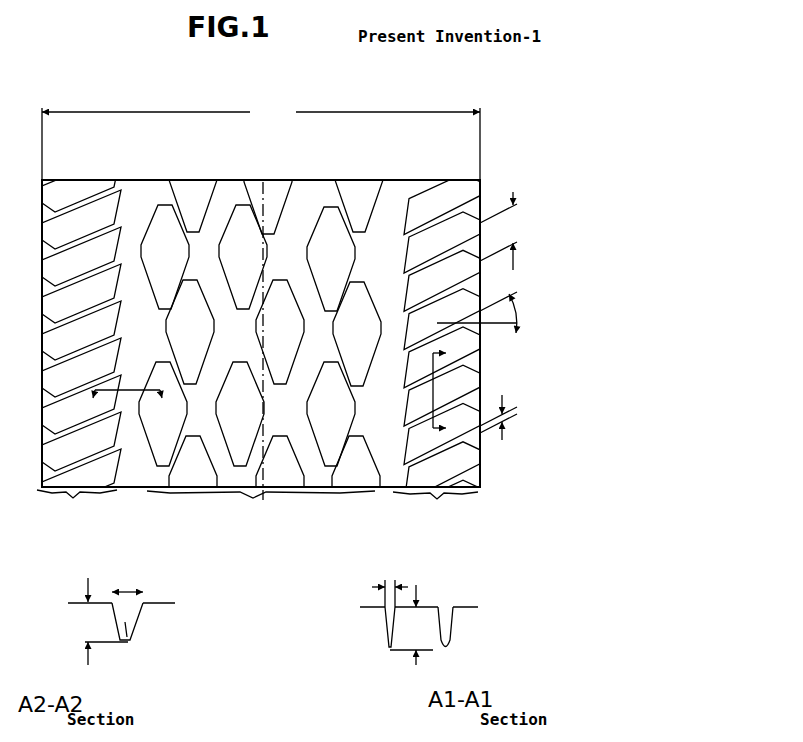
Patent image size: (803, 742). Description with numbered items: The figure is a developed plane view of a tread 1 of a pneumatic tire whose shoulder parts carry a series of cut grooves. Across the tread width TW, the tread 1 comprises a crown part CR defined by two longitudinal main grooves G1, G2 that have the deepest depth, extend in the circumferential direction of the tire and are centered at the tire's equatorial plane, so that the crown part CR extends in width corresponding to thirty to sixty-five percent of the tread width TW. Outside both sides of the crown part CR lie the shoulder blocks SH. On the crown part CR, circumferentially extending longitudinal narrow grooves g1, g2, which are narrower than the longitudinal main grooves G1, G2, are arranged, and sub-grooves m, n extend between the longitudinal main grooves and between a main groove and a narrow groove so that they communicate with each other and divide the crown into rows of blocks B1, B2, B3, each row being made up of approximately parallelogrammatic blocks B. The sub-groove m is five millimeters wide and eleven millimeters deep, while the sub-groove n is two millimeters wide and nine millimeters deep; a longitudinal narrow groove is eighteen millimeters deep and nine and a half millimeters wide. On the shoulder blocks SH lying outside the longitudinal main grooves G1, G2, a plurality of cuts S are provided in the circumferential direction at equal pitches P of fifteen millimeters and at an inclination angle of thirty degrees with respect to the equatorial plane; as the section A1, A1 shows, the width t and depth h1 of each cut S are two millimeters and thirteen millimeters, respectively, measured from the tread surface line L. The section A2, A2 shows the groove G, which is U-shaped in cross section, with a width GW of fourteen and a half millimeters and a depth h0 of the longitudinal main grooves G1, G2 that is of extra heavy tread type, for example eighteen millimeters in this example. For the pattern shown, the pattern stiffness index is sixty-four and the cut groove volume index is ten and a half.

The tread 1 is at (497, 197).
The tread width TW is at (261, 140).
The crown part CR is at (262, 352).
The shoulder blocks SH is at (258, 347).
The block B is at (163, 261).
The row of blocks B1 is at (302, 176).
The row of blocks B2 is at (215, 176).
The row of blocks B3 is at (392, 176).
The longitudinal main groove G1 is at (404, 196).
The longitudinal main groove G2 is at (137, 197).
The longitudinal narrow groove g1 is at (222, 195).
The longitudinal narrow groove g2 is at (313, 192).
The pitch P is at (500, 231).
The cut S is at (470, 355).
The section A1- A1 is at (446, 395).
The width of the cut t is at (445, 500).
The section A2- A2 is at (126, 405).
The sub-groove m is at (258, 466).
The sub-groove n is at (342, 443).
The tread surface line L is at (160, 601).
The groove G is at (128, 642).
The width of the groove GW is at (130, 580).
The depth of the longitudinal main grooves h0 is at (105, 621).
The depth of the cut h1 is at (419, 625).